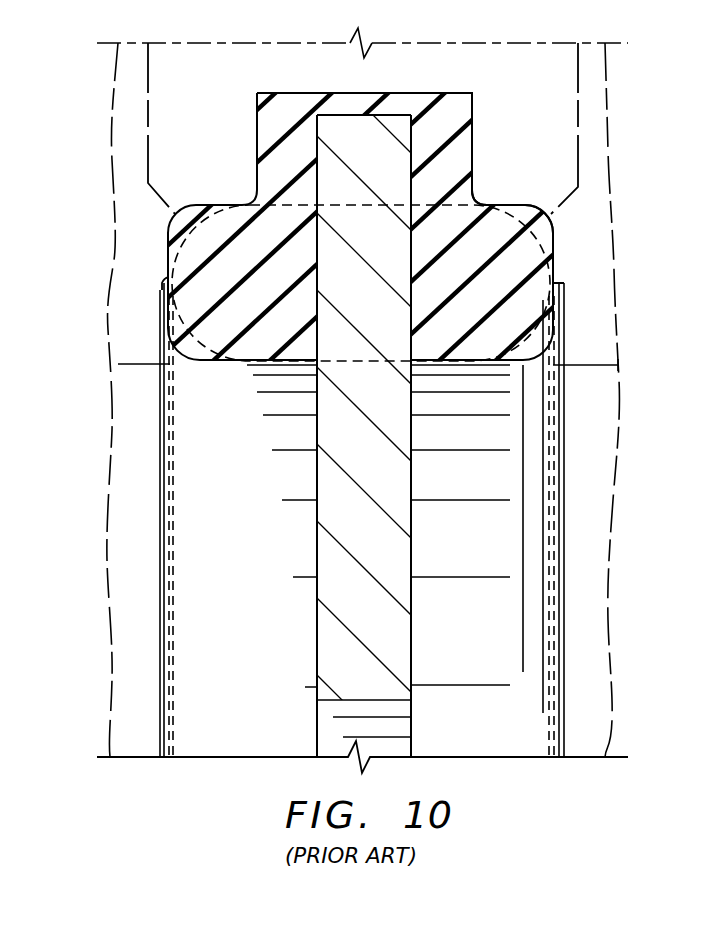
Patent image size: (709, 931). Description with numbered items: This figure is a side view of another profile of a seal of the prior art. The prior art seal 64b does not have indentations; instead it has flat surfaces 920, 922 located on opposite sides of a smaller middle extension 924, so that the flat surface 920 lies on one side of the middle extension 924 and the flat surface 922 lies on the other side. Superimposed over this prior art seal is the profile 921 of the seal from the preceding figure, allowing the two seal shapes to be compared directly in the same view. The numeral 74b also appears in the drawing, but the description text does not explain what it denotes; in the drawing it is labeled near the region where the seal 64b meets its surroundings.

The flat surface 920 is at (563, 258).
The profile 921 is at (552, 217).
The flat surface 922 is at (560, 308).
The smaller middle extension 924 is at (564, 290).
The housing seal groove 74b is at (560, 233).
The seal 64b is at (457, 366).